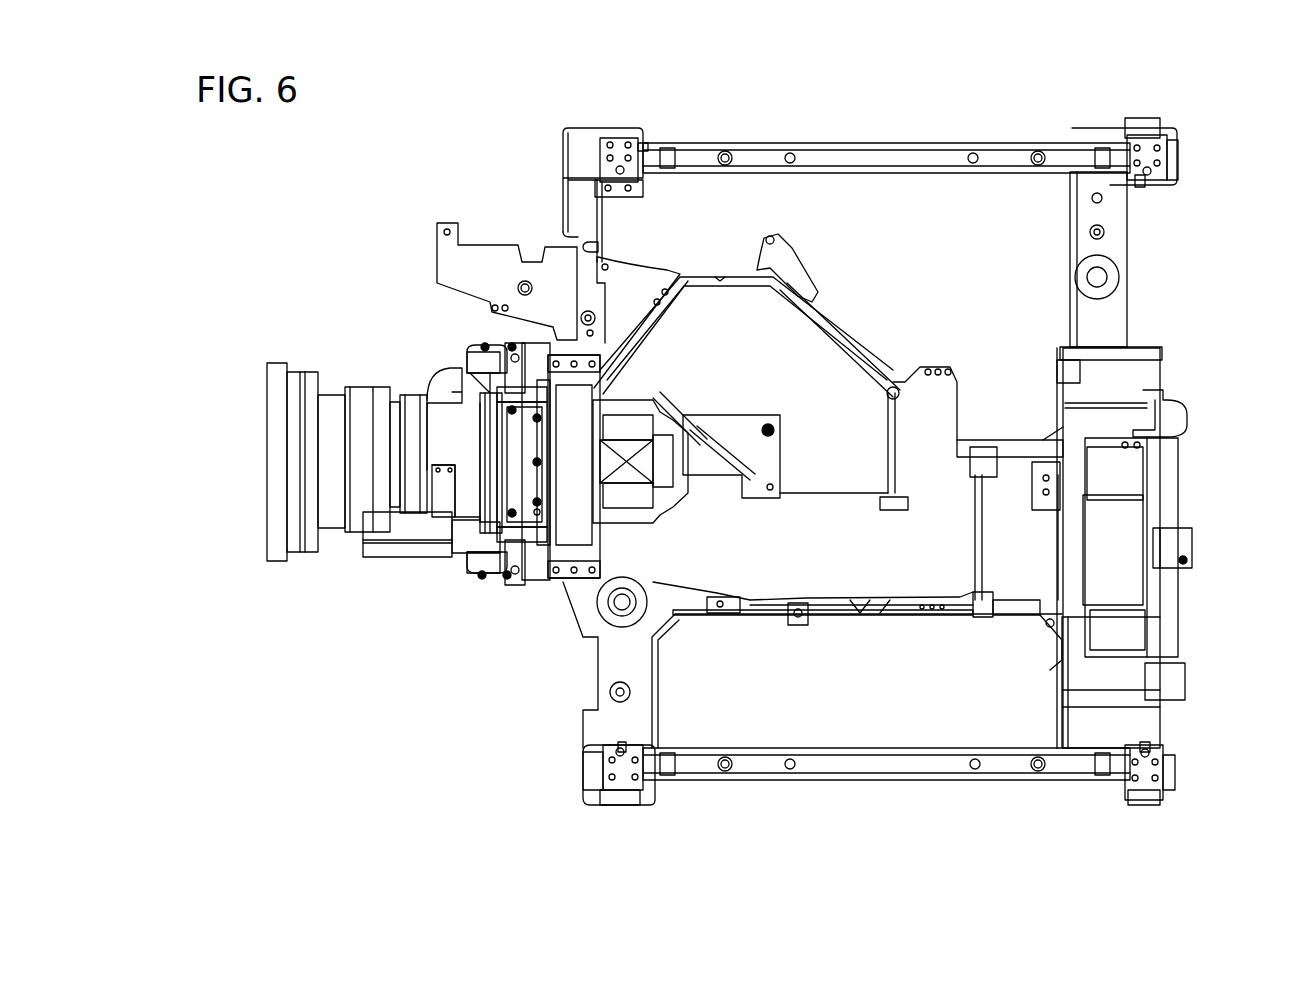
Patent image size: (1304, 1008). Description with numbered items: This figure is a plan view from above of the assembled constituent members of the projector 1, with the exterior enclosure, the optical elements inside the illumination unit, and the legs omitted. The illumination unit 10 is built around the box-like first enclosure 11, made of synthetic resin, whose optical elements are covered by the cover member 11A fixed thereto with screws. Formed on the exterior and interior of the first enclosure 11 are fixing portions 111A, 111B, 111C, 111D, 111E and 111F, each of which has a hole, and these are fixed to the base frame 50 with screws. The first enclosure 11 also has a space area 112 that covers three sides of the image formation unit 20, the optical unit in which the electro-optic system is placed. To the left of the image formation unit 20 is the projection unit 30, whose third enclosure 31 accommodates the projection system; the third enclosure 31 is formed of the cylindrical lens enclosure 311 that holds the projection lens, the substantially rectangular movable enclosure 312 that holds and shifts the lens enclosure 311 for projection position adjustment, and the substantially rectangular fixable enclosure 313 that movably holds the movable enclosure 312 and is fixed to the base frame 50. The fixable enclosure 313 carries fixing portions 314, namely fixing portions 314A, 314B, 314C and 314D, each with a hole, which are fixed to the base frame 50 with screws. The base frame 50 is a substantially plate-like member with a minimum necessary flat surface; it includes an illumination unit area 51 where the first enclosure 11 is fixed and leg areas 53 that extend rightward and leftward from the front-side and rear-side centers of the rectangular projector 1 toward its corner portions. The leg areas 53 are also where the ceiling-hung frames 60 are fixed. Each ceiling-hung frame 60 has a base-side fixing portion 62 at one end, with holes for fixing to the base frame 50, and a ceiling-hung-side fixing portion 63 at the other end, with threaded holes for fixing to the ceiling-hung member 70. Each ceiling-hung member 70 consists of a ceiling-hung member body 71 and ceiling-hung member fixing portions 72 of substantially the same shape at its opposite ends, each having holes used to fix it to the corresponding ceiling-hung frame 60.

The projector 1 is at (392, 128).
The illumination unit 10 is at (934, 488).
The first enclosure 11 is at (754, 312).
The cover member 11A is at (733, 297).
The fixing portion 111A is at (797, 626).
The fixing portion 111B is at (1040, 628).
The fixing portion 111C is at (1195, 560).
The fixing portion 111D is at (990, 450).
The fixing portion 111E is at (883, 390).
The fixing portion 111F is at (768, 425).
The space area 112 is at (658, 405).
The image formation unit 20 is at (650, 434).
The projection unit 30 is at (318, 342).
The third enclosure 31 is at (469, 433).
The lens enclosure 311 is at (365, 525).
The movable enclosure 312 is at (475, 545).
The fixable enclosure 313 is at (515, 548).
The fixing portions 314 is at (523, 433).
The fixing portion 314A is at (548, 583).
The fixing portion 314B is at (552, 606).
The fixing portion 314C is at (587, 345).
The fixing portion 314D is at (535, 345).
The base frame 50 is at (432, 252).
The illumination unit area 51 is at (880, 624).
The leg areas 53 is at (612, 226).
The ceiling-hung frame 60 is at (605, 140).
The base-side fixing portion 62 is at (620, 205).
The ceiling-hung-side fixing portion 63 is at (620, 140).
The ceiling-hung member 70 is at (883, 443).
The ceiling-hung member body 71 is at (843, 141).
The ceiling-hung member fixing portion 72 is at (628, 143).